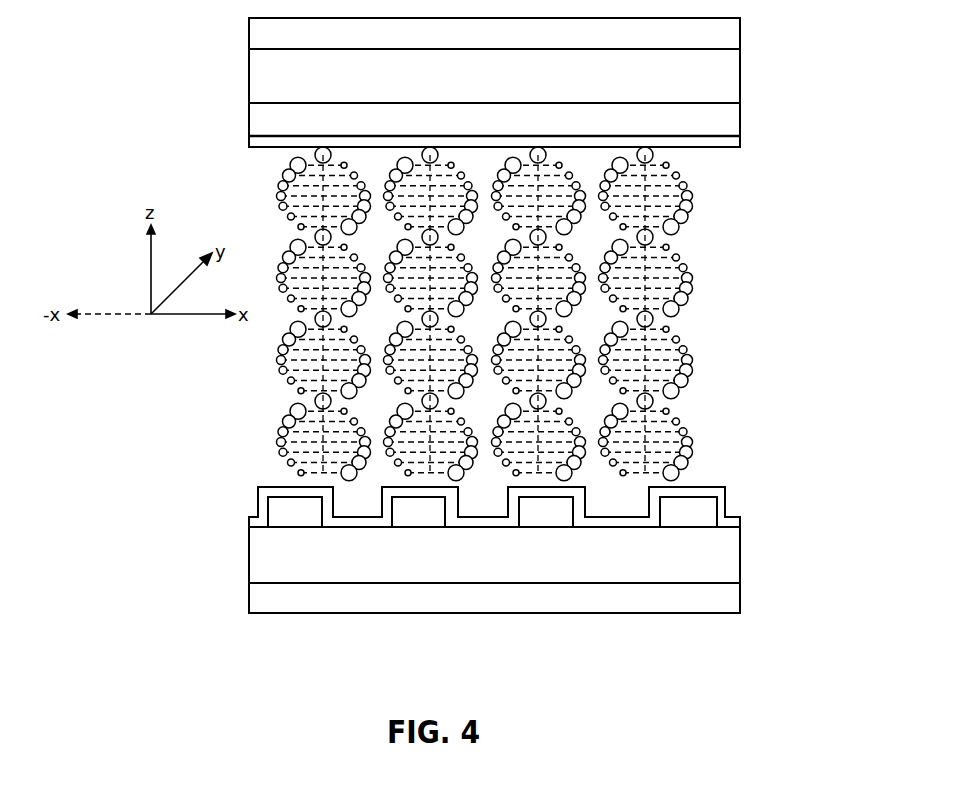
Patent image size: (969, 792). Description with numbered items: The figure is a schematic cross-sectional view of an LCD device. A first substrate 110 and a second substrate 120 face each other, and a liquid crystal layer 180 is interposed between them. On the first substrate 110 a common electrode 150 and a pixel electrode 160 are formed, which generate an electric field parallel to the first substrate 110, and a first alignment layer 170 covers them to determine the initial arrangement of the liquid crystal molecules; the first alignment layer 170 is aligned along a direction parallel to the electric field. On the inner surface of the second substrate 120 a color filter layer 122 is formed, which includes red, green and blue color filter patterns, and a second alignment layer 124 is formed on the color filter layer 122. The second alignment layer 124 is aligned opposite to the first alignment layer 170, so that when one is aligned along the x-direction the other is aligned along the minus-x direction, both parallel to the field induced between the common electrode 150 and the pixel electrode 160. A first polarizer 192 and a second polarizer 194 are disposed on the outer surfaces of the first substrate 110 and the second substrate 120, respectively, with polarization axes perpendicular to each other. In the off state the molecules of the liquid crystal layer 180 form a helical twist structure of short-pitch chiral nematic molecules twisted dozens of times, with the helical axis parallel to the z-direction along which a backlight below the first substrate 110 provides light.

The first substrate 110 is at (494, 570).
The second substrate 120 is at (494, 82).
The color filter layer 122 is at (723, 116).
The second alignment layer 124 is at (723, 140).
The common electrode 150 is at (558, 638).
The pixel electrode 160 is at (692, 638).
The first alignment layer 170 is at (718, 501).
The liquid crystal layer 180 is at (506, 314).
The first polarizer 192 is at (725, 596).
The second polarizer 194 is at (723, 31).